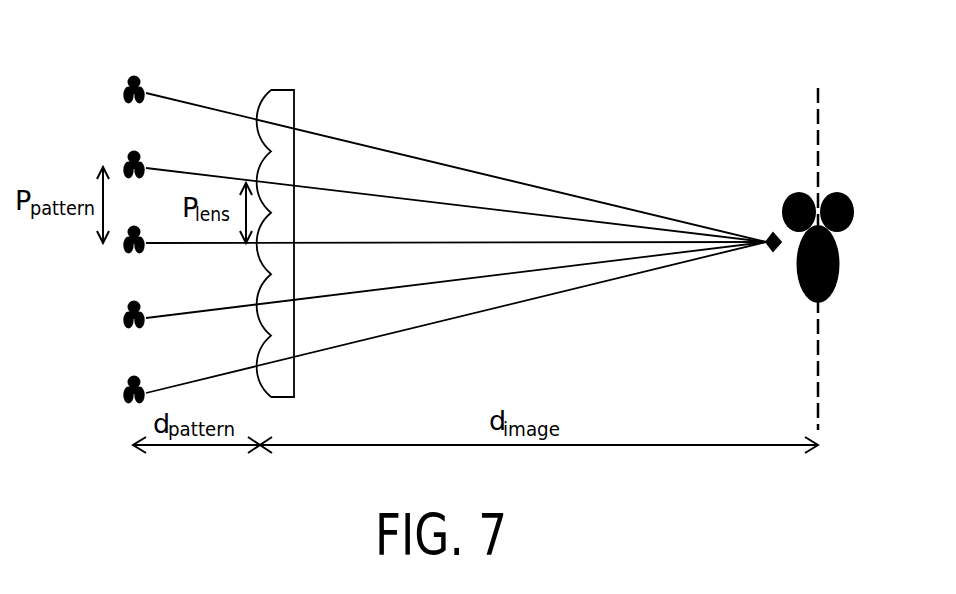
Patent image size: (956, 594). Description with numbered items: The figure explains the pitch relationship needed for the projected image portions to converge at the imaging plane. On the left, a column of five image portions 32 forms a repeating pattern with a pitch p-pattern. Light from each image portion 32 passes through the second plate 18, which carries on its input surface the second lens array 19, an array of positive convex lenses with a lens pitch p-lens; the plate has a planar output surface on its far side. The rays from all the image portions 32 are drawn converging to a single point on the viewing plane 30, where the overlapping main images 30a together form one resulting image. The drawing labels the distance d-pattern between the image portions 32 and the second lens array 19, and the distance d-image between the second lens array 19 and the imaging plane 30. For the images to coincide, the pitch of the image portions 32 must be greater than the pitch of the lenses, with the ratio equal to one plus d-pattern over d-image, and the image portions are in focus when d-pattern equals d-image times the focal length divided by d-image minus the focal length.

The image portions 32 is at (123, 99).
The second lens array 19 is at (259, 103).
The second plate 18 is at (283, 90).
The viewing plane 30 is at (817, 380).
The main images 30a is at (786, 204).